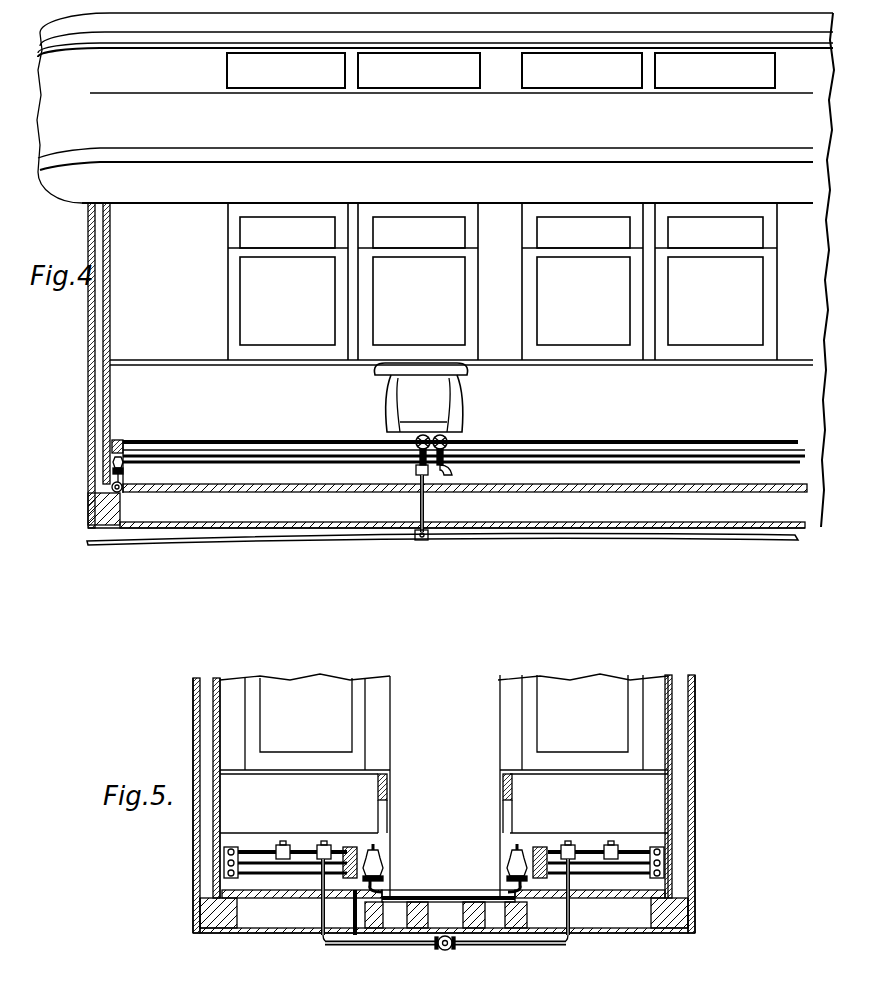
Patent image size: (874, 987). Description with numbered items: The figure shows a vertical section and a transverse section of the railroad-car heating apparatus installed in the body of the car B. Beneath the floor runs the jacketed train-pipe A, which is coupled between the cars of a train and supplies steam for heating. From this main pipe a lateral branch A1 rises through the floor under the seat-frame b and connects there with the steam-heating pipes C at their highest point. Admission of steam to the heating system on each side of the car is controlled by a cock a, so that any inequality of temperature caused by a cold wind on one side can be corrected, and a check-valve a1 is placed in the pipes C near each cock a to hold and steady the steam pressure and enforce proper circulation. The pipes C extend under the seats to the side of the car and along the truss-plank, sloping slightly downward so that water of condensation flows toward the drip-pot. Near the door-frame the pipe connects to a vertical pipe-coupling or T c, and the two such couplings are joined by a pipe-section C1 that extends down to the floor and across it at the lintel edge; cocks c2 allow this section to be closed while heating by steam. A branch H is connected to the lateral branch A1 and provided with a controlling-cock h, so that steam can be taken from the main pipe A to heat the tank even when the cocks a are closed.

In FIG. 4, the train-pipe A is at (442, 552).
In FIG. 5, the train-pipe A is at (440, 956).
In FIG. 4, the lateral branch A1 is at (426, 510).
In FIG. 5, the lateral branch A1 is at (445, 918).
In FIG. 4, the body of the car B is at (435, 270).
In FIG. 5, the body of the car B is at (444, 803).
In FIG. 4, the steam-heating pipes C is at (289, 497).
In FIG. 5, the steam-heating pipes C is at (289, 866).
In FIG. 4, the pipe-section C1 is at (112, 488).
In FIG. 5, the pipe-section C1 is at (222, 855).
In FIG. 4, the cock a is at (413, 438).
In FIG. 5, the cock a is at (340, 846).
In FIG. 5, the check-valve a1 is at (285, 847).
In FIG. 4, the seat-frame b is at (420, 397).
In FIG. 5, the seat-frame b is at (445, 845).
In FIG. 4, the pipe-coupling c is at (122, 440).
In FIG. 4, the cock c2 is at (112, 462).
In FIG. 5, the cock c2 is at (382, 866).
In FIG. 4, the controlling-cock h is at (449, 438).
In FIG. 4, the branch H is at (692, 440).